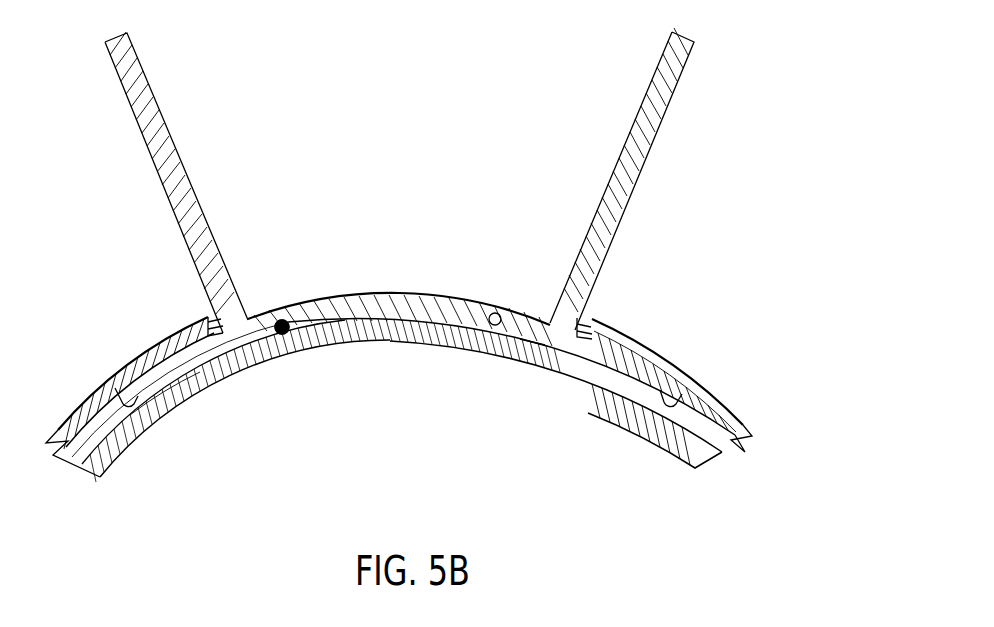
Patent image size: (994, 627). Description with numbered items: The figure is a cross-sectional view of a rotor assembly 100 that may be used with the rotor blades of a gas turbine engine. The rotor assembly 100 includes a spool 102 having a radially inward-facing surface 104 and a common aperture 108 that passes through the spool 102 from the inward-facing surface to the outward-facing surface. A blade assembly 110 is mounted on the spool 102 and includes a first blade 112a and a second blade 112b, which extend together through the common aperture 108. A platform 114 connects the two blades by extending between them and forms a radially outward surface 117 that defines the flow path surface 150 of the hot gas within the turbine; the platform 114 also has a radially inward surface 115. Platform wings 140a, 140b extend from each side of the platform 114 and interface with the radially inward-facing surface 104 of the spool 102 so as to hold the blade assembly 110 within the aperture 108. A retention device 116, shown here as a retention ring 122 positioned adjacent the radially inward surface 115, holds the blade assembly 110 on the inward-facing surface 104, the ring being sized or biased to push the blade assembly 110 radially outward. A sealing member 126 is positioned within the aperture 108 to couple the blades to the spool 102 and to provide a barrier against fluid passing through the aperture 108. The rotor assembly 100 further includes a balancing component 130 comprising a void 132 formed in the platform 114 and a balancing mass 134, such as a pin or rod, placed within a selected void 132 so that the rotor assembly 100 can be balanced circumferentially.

The rotor assembly 100 is at (798, 136).
The spool 102 is at (615, 330).
The radially inward-facing surface 104 is at (104, 423).
The aperture 108 is at (388, 200).
The blade assembly 110 is at (180, 204).
The first blade 112a is at (172, 158).
The second blade 112b is at (652, 128).
The platform 114 is at (531, 341).
The radially inward surface of the platform 115 is at (326, 340).
The retention device 116 is at (436, 355).
The radially outward surface 117 is at (338, 289).
The retention ring 122 is at (165, 407).
The sealing member 126 is at (205, 315).
The balancing component 130 is at (298, 315).
The void 132 is at (492, 337).
The balancing mass 134 is at (282, 334).
The platform wing 140a is at (122, 395).
The platform wing 140b is at (677, 395).
The flow path surface 150 is at (436, 289).